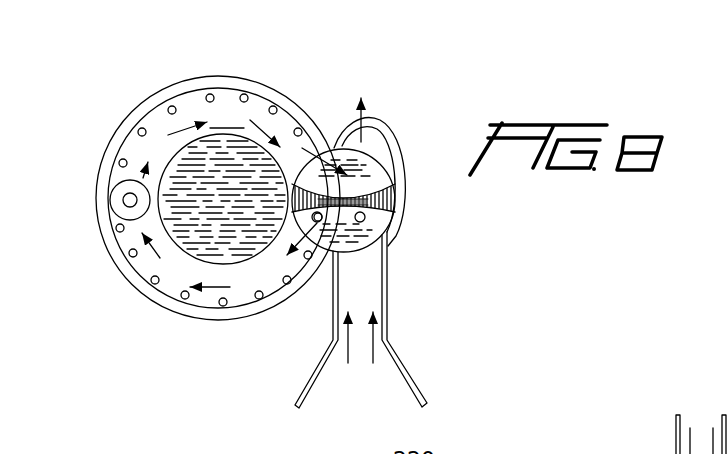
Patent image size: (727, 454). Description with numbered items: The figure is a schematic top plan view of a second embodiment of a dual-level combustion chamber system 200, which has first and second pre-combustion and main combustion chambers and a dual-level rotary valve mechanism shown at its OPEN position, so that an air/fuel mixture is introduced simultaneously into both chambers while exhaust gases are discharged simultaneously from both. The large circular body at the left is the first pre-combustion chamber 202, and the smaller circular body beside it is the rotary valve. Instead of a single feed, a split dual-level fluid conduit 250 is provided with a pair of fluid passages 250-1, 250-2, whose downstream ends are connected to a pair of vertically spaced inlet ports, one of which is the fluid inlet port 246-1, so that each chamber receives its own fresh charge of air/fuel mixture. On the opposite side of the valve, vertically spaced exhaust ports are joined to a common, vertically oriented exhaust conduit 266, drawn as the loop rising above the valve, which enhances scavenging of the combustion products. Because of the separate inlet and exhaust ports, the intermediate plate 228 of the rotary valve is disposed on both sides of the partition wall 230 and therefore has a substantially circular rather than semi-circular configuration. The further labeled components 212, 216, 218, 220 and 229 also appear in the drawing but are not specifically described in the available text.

The dual-level combustion chamber system 200 is at (329, 82).
The first pre-combustion chamber 202 is at (190, 106).
The central fluid passage 212 is at (249, 213).
The annular flow region 216 is at (282, 291).
The pilot port 218 is at (111, 192).
The bolt holes 220 is at (139, 128).
The intermediate plate 228 is at (324, 151).
The secondary outlet 229 is at (627, 441).
The partition wall 230 is at (385, 198).
The fluid inlet port 246-1 is at (366, 250).
The split dual-level fluid conduit 250 is at (333, 323).
The fluid passage 250-1 is at (370, 297).
The fluid passage 250-2 is at (690, 453).
The exhaust conduit 266 is at (398, 118).